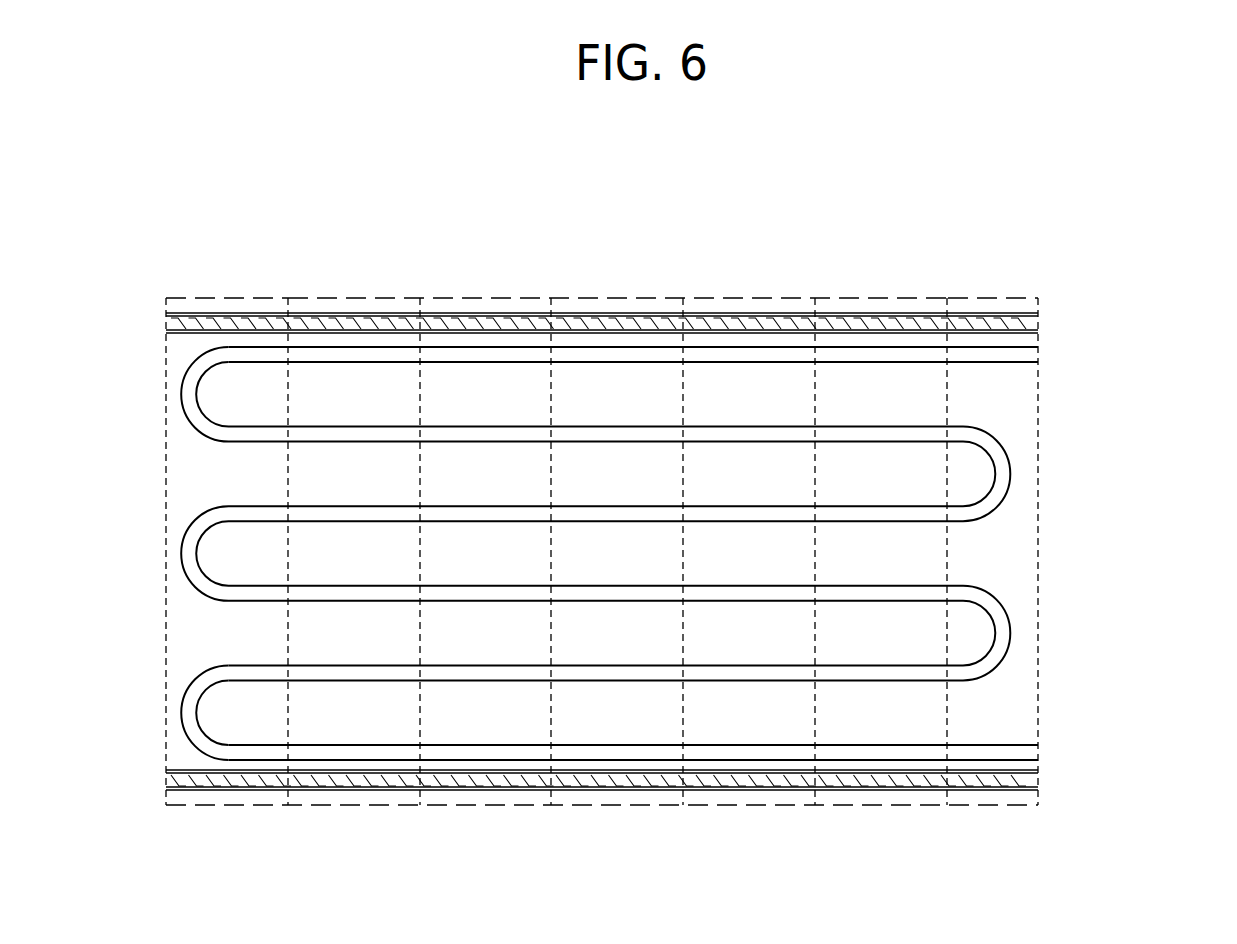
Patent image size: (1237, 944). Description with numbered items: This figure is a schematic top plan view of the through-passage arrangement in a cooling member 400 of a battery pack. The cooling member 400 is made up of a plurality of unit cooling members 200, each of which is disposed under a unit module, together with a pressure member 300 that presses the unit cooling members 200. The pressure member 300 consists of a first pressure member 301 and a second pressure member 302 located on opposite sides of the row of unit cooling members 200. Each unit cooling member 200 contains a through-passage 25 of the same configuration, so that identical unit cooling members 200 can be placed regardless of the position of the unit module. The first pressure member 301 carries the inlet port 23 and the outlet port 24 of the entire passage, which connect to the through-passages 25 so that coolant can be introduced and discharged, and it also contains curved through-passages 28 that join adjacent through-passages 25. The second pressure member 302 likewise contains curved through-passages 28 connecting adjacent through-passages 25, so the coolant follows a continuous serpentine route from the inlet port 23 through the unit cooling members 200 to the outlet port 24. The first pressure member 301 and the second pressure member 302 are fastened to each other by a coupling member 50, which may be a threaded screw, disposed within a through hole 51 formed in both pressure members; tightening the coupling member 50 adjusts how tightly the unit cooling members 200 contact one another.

The inlet port 23 is at (1028, 357).
The outlet port 24 is at (1028, 752).
The through-passage 25 is at (632, 674).
The curved through-passage 28 is at (1010, 466).
The coupling member 50 is at (1033, 324).
The through hole 51 is at (917, 778).
The unit cooling member 200 is at (362, 308).
The pressure member 300 is at (1187, 215).
The first pressure member 301 is at (996, 306).
The second pressure member 302 is at (223, 308).
The cooling member 400 is at (1183, 133).